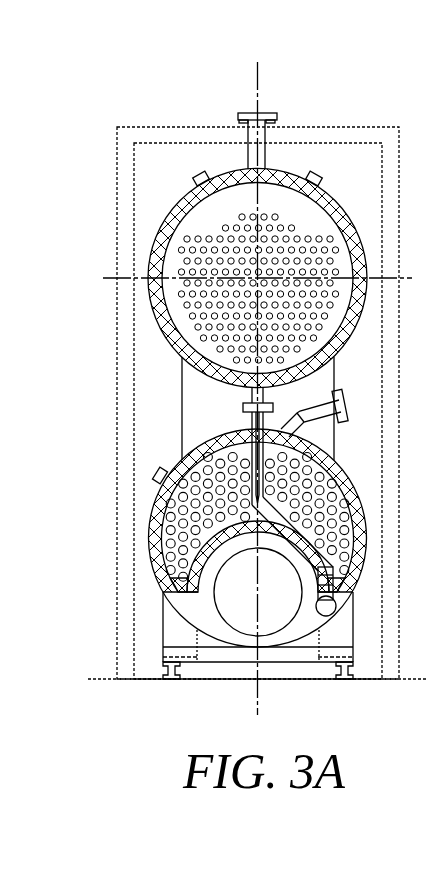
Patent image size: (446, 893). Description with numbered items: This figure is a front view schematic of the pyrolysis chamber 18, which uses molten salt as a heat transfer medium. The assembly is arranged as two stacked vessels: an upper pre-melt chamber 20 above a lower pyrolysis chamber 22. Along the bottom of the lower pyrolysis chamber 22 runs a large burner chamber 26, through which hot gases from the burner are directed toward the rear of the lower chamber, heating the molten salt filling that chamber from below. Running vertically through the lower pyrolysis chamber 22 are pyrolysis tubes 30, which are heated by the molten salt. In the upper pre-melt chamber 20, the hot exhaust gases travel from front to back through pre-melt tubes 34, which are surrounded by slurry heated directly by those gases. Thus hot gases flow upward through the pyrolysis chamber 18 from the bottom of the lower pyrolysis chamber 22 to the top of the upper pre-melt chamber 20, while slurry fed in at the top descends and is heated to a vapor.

The pyrolysis chamber 18 is at (198, 90).
The upper pre-melt chamber 20 is at (205, 262).
The lower pyrolysis chamber 22 is at (207, 563).
The burner chamber 26 is at (247, 617).
The pyrolysis tubes 30 is at (247, 452).
The pre-melt tubes 34 is at (225, 258).